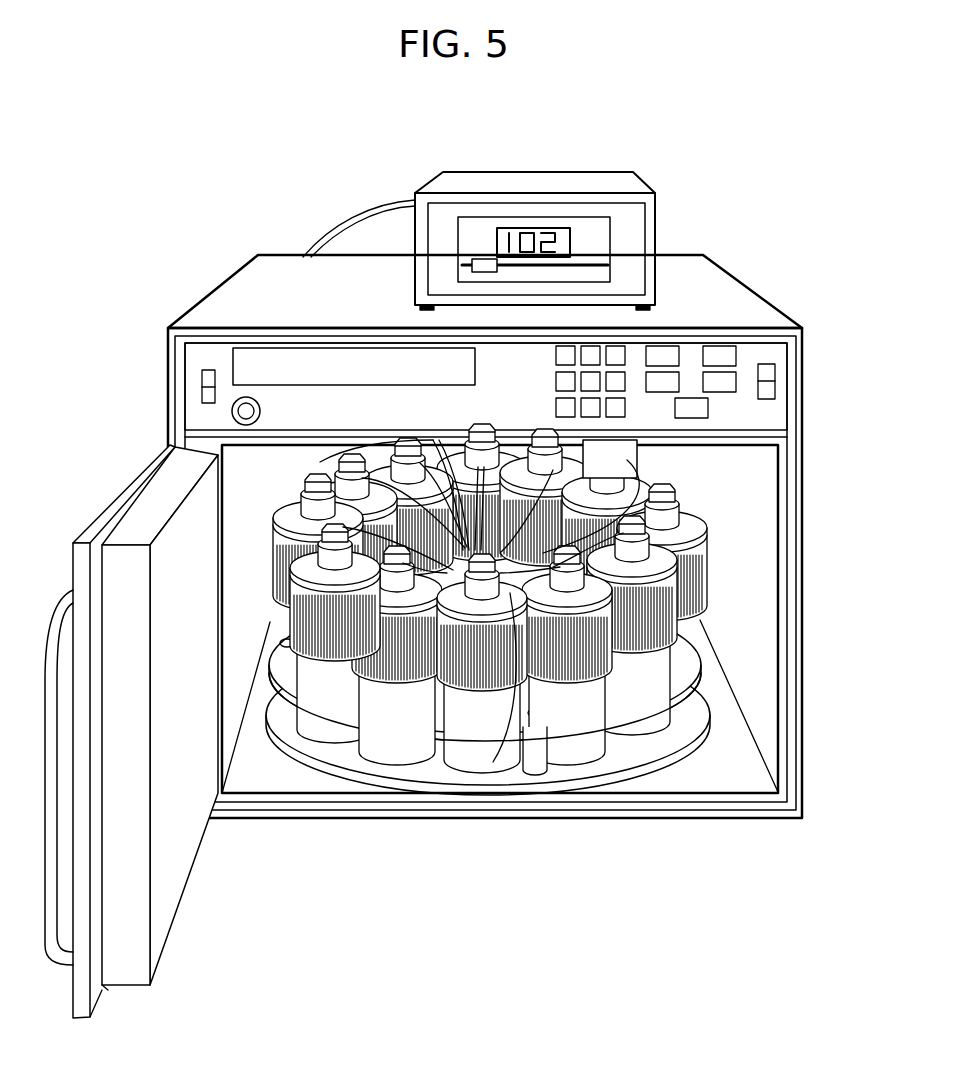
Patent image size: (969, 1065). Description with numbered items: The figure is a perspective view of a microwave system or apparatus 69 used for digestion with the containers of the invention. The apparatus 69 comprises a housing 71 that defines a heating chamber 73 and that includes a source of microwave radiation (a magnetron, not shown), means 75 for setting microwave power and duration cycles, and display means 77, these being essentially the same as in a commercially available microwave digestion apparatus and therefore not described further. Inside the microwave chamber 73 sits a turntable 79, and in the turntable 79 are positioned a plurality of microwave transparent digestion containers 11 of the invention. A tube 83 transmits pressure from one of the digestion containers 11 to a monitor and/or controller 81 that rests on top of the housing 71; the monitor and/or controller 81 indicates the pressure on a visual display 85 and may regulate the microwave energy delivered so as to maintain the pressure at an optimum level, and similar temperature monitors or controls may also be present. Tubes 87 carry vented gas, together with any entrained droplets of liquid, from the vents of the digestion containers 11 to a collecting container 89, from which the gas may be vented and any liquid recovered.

The digestion container 11 is at (377, 693).
The microwave apparatus 69 is at (826, 495).
The housing 71 is at (810, 702).
The heating chamber 73 is at (763, 600).
The means for setting microwave power and duration cycles 75 is at (737, 355).
The display means 77 is at (233, 357).
The turntable 79 is at (627, 713).
The monitor and/or controller 81 is at (527, 172).
The tube 83 is at (332, 232).
The visual display 85 is at (570, 238).
The tubes 87 is at (489, 684).
The collecting container 89 is at (577, 555).